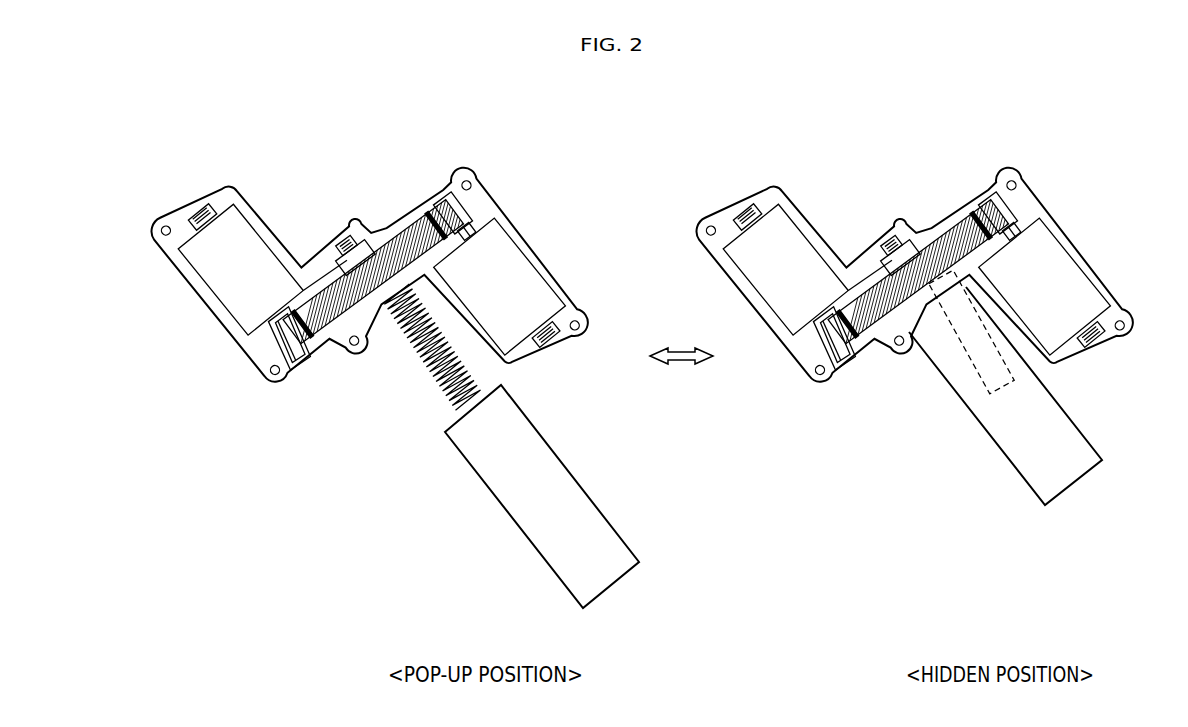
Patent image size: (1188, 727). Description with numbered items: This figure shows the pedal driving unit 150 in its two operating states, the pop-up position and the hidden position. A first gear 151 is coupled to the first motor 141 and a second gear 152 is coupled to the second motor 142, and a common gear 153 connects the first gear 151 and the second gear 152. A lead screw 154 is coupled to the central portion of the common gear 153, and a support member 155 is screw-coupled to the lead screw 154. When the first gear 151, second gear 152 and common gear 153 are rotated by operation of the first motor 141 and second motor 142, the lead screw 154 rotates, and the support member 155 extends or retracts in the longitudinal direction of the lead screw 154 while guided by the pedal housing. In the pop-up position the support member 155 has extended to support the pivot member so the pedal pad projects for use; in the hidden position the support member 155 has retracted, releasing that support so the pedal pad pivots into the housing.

The first motor 141 is at (222, 283).
The second motor 142 is at (518, 272).
The pedal driving unit 150 is at (776, 447).
The first gear 151 is at (287, 342).
The second gear 152 is at (443, 195).
The common gear 153 is at (407, 237).
The lead screw 154 is at (418, 372).
The support member 155 is at (553, 548).